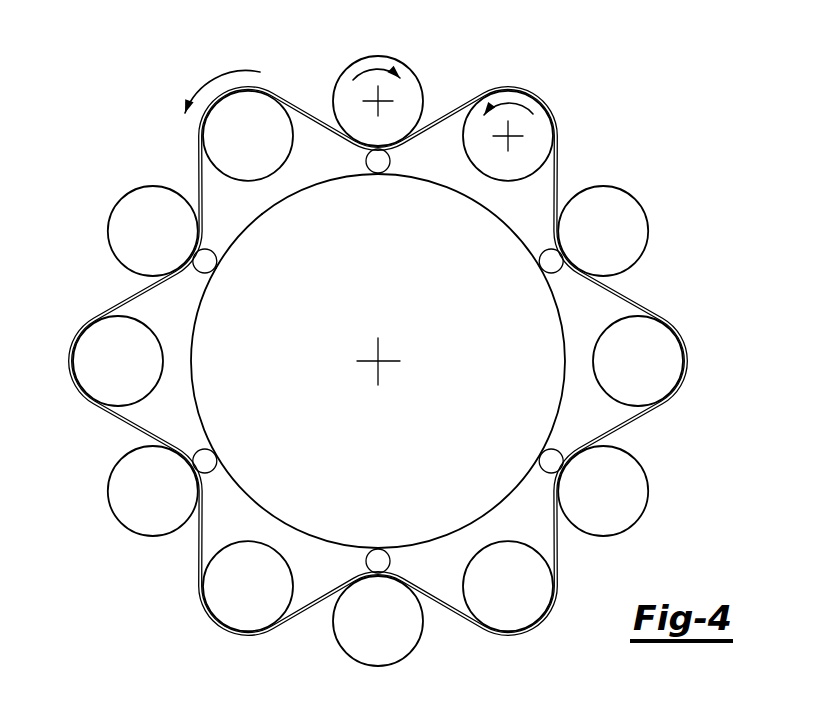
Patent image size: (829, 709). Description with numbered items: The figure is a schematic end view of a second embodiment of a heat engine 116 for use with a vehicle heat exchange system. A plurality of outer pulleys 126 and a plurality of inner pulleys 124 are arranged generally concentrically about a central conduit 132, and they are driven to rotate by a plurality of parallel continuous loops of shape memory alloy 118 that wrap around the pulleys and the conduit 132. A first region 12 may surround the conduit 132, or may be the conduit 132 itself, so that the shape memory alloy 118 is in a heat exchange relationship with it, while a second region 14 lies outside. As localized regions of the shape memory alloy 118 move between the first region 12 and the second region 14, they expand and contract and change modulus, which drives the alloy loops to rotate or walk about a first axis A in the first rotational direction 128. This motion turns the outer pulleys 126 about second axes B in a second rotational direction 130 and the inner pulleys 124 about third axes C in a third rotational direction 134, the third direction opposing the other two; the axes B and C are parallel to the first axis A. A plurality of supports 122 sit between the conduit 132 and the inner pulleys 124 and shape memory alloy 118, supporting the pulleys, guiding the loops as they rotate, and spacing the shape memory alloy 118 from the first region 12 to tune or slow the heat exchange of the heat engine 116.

The first region 12 is at (392, 488).
The second region 14 is at (103, 448).
The heat engine 116 is at (110, 118).
The shape memory alloy 118 is at (200, 550).
The supports 122 is at (560, 443).
The inner pulleys 124 is at (603, 231).
The outer pulleys 126 is at (637, 362).
The first rotational direction 128 is at (216, 80).
The second rotational direction 130 is at (522, 106).
The conduit 132 is at (197, 318).
The third rotational direction 134 is at (377, 67).
The first axis A is at (380, 364).
The second axes B is at (520, 126).
The third axes C is at (370, 99).